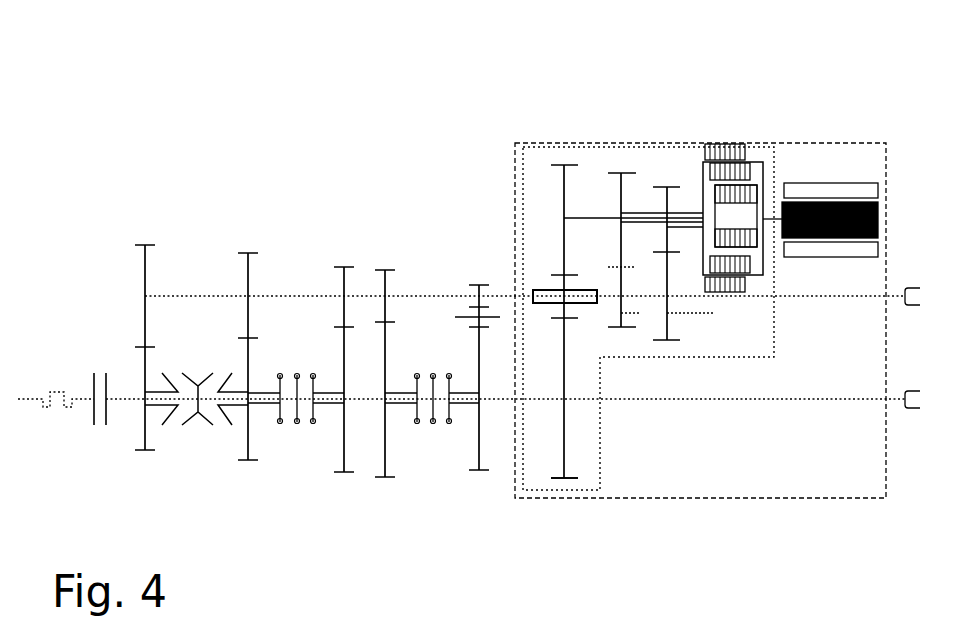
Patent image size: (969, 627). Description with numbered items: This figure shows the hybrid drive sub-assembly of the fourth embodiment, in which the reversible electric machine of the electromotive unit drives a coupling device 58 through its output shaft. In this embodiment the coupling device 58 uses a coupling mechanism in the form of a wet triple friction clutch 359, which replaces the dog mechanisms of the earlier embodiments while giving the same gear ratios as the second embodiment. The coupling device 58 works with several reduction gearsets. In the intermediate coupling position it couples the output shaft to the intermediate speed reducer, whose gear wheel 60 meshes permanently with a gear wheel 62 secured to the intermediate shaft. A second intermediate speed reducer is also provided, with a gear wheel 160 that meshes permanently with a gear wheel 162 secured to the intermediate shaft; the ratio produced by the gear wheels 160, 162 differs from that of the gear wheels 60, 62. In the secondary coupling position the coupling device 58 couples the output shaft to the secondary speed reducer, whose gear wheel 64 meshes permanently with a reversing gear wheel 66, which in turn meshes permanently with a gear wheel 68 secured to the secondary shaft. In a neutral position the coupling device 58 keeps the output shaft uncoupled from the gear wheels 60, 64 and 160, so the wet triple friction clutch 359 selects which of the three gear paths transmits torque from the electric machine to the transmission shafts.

The coupling device 58 is at (600, 478).
The gear wheel 60 is at (621, 200).
The gear wheel 62 is at (640, 313).
The gear wheel 64 is at (564, 200).
The reversing gear wheel 66 is at (557, 313).
The gear wheel 68 is at (564, 465).
The gear wheel 160 is at (667, 200).
The gear wheel 162 is at (713, 313).
The wet triple friction clutch 359 is at (773, 152).